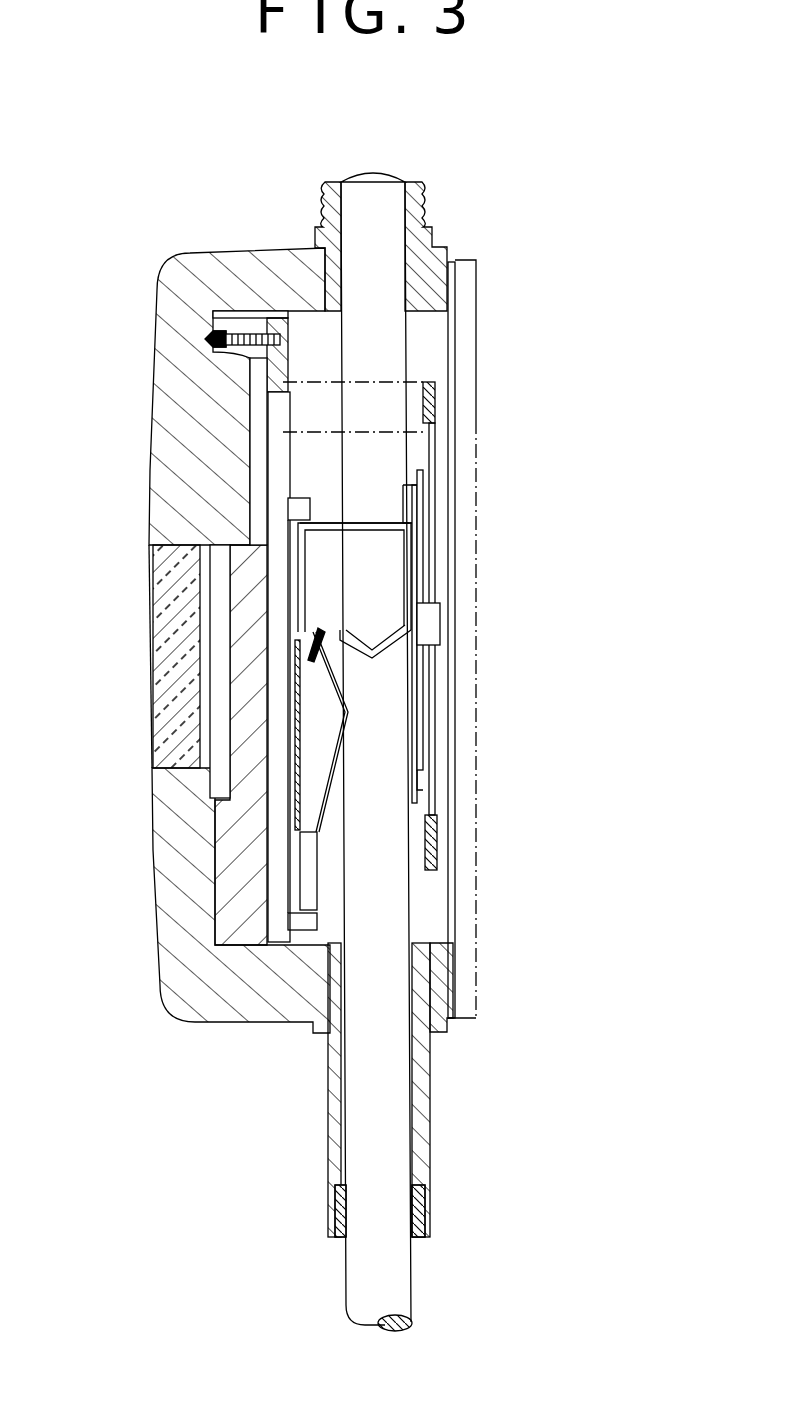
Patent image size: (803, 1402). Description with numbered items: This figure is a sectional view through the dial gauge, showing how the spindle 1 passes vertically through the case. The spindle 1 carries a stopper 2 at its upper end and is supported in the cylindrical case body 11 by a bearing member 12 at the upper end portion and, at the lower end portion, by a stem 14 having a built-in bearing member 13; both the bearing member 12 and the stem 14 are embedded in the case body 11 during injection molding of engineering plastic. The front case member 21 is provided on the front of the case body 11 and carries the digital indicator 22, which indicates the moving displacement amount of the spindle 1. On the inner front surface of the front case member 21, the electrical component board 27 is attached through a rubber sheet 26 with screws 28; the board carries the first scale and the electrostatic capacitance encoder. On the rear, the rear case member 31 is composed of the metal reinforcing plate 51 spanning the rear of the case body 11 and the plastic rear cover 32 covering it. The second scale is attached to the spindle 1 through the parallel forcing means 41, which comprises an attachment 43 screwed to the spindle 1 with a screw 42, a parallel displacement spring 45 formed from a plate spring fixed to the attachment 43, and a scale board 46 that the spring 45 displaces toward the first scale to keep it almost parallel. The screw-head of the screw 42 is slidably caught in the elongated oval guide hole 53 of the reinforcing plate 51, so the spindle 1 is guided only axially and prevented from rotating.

The spindle 1 is at (358, 1293).
The stopper 2 is at (382, 173).
The case body 11 is at (268, 260).
The bearing member 12 is at (323, 193).
The bearing member 13 is at (333, 1213).
The stem 14 is at (333, 1135).
The front case member 21 is at (158, 490).
The digital indicator 22 is at (215, 668).
The rubber sheet 26 is at (223, 843).
The electrical component board 27 is at (278, 887).
The screw 28 is at (222, 347).
The rear case member 31 is at (473, 310).
The rear cover 32 is at (473, 343).
The parallel forcing means 41 is at (412, 563).
The screw 42 is at (432, 632).
The attachment 43 is at (383, 527).
The parallel displacement spring 45 is at (332, 782).
The scale board 46 is at (300, 503).
The reinforcing plate 51 is at (430, 400).
The guide hole 53 is at (432, 745).